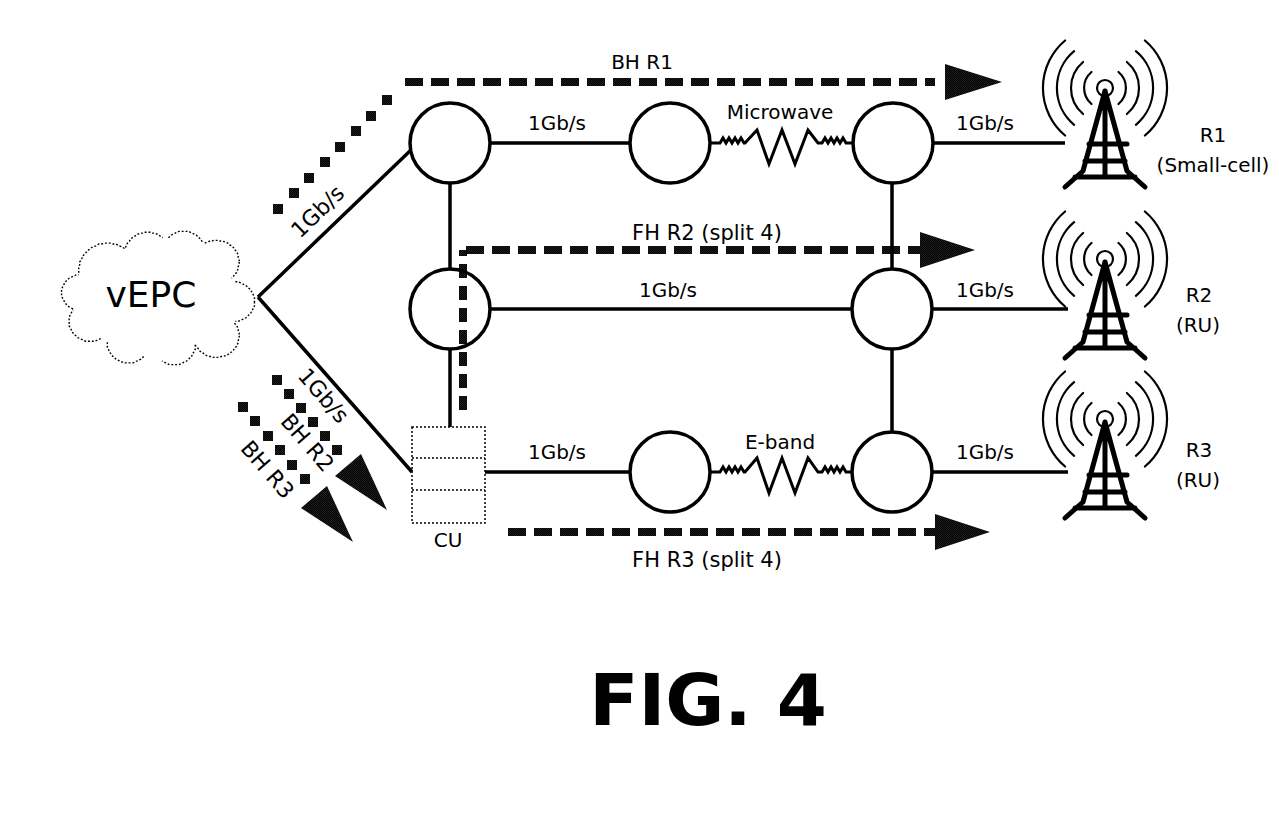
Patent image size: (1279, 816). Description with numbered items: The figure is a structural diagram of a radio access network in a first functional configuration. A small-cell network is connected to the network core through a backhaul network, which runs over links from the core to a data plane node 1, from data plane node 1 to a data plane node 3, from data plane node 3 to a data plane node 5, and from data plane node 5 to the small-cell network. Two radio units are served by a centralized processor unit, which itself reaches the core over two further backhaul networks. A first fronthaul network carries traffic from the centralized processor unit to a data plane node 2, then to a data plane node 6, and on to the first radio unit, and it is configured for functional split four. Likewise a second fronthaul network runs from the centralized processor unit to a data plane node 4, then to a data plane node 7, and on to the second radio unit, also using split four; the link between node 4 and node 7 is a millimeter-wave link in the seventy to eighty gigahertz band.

The data plane node 1 is at (450, 143).
The data plane node 2 is at (450, 309).
The data plane node 3 is at (670, 143).
The data plane node 4 is at (670, 472).
The data plane node 5 is at (893, 143).
The data plane node 6 is at (892, 309).
The data plane node 7 is at (892, 472).